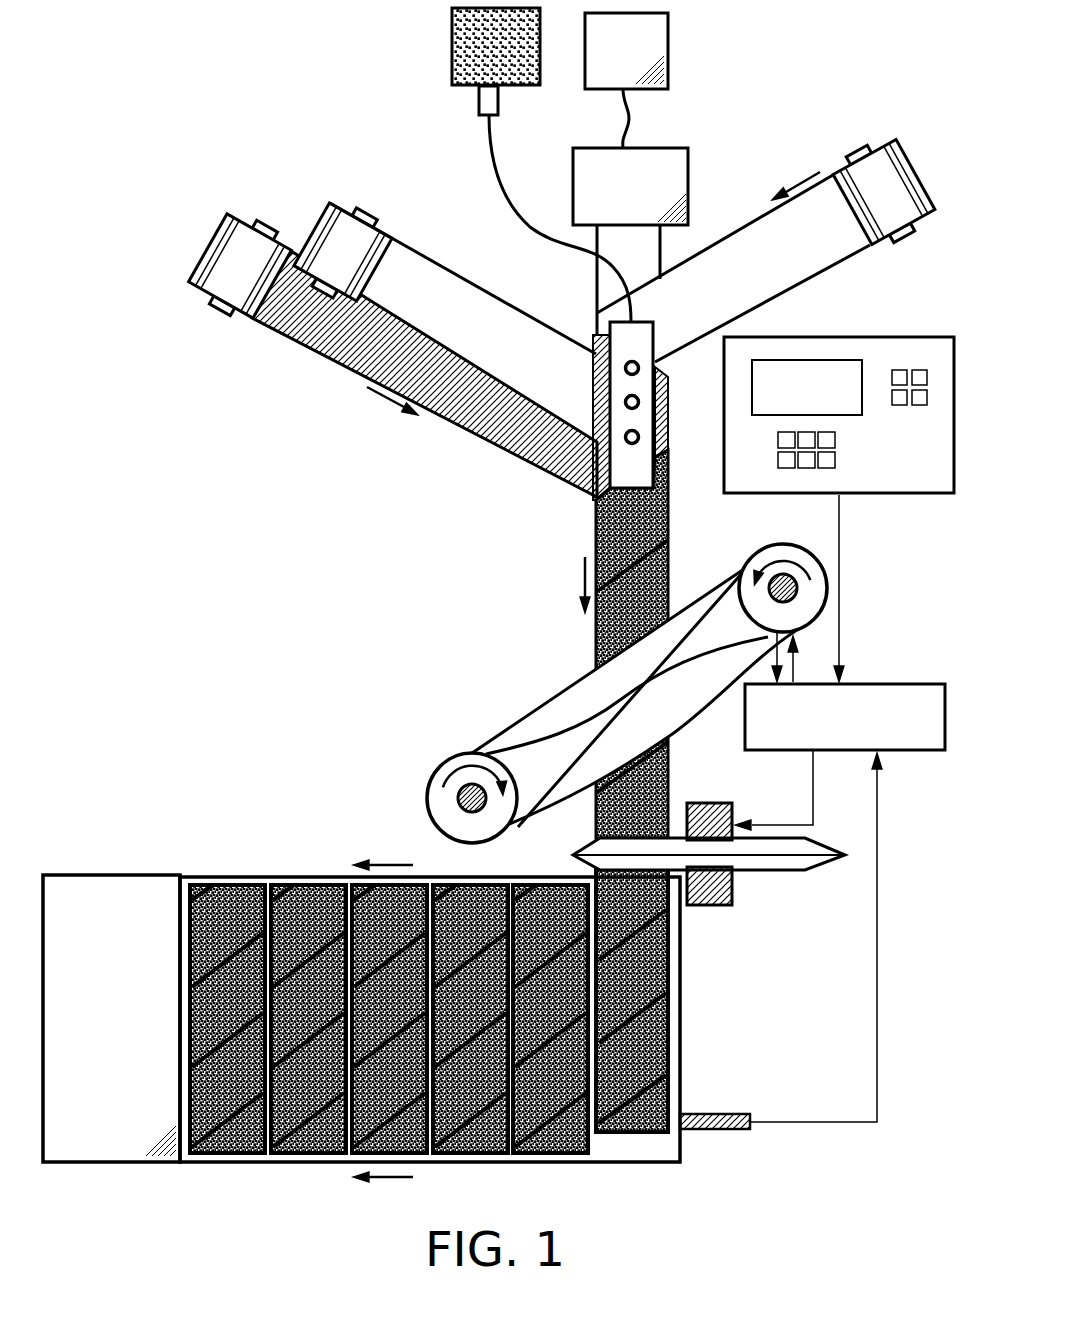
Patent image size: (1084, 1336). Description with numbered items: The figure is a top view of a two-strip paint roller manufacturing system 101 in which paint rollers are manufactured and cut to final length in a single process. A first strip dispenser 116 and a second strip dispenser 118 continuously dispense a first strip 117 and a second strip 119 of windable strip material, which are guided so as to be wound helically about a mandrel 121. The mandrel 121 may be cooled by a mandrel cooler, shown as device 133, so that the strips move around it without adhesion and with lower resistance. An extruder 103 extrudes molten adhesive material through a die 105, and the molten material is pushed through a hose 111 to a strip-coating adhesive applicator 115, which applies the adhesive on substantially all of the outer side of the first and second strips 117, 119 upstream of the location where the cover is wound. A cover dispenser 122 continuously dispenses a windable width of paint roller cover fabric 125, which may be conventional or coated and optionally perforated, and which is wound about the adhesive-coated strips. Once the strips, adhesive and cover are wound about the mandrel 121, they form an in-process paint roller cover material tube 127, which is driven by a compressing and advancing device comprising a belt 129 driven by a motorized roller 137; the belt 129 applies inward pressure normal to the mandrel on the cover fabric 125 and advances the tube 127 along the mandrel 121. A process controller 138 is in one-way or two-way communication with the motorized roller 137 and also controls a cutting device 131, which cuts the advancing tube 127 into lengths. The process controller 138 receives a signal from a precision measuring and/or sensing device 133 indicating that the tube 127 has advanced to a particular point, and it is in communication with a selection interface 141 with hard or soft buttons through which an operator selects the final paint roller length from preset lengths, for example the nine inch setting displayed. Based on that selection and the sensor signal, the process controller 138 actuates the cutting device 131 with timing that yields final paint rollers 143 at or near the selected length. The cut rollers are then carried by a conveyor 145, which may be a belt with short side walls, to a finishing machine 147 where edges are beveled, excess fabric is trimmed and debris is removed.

The paint roller manufacturing system 101 is at (215, 38).
The extruder 103 is at (451, 23).
The die 105 is at (478, 102).
The hose 111 is at (494, 128).
The applicator 115 is at (668, 399).
The first strip dispenser 116 is at (903, 248).
The first strip 117 is at (803, 280).
The second strip dispenser 118 is at (321, 222).
The second strip 119 is at (496, 299).
The mandrel 121 is at (661, 245).
The cover dispenser 122 is at (266, 217).
The paint roller cover fabric 125 is at (350, 370).
The in-process paint roller cover material tube 127 is at (595, 826).
The belt 129 is at (528, 711).
The cutting device 131 is at (700, 907).
The precision measuring and/or sensing device 133 is at (670, 60).
The motorized roller 137 is at (778, 545).
The process controller 138 is at (840, 877).
The selection interface 141 is at (920, 494).
The final paint rollers 143 is at (693, 1028).
The conveyor 145 is at (488, 876).
The finishing machine 147 is at (93, 875).